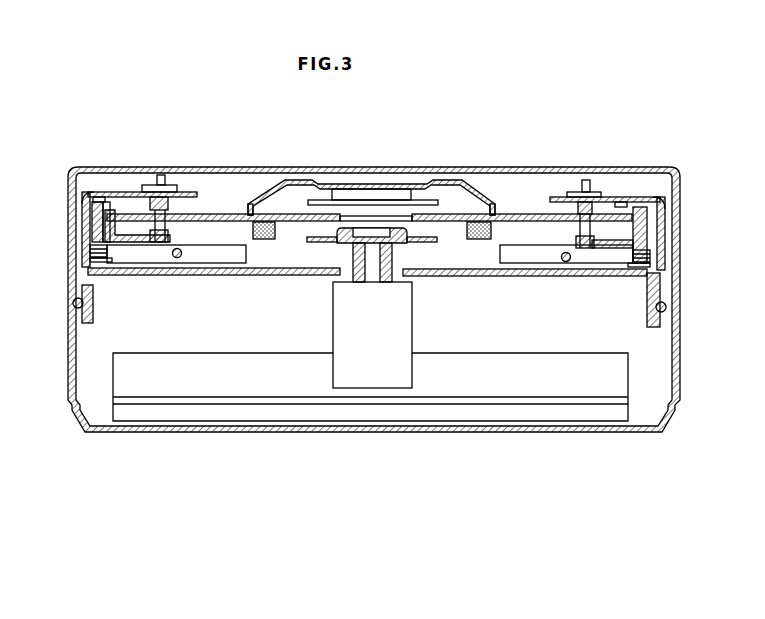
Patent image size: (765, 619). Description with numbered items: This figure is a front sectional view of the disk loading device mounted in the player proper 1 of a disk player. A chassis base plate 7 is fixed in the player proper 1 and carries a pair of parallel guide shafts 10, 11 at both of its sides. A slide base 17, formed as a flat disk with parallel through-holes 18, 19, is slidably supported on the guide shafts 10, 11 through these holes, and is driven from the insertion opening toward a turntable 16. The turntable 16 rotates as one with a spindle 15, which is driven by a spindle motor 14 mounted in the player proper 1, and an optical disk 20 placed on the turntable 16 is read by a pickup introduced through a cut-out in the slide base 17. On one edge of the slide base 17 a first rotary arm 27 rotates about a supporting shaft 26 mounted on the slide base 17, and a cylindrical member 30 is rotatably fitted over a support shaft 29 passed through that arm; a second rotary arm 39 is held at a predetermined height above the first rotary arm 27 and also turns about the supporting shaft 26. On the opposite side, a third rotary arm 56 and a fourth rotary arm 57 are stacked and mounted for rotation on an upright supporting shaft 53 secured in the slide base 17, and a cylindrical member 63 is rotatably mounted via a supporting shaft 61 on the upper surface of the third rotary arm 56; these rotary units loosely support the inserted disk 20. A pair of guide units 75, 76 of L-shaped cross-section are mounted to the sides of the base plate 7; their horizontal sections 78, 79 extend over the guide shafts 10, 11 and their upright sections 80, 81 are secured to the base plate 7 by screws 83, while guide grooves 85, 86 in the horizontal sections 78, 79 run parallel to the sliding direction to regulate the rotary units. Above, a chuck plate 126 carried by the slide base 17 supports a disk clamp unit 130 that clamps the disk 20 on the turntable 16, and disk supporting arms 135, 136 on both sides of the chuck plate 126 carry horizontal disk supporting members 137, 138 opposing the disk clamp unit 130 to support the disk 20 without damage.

The player proper 1 is at (683, 177).
The chassis base plate 7 is at (232, 276).
The guide shaft 10 is at (190, 276).
The guide shaft 11 is at (565, 277).
The spindle motor 14 is at (389, 380).
The spindle 15 is at (372, 272).
The turntable 16 is at (440, 243).
The slide base 17 is at (618, 264).
The through-hole 18 is at (175, 258).
The through-hole 19 is at (563, 262).
The optical disk 20 is at (219, 214).
The supporting shaft 26 is at (90, 256).
The first rotary arm 27 is at (128, 264).
The support shaft 29 is at (160, 175).
The cylindrical member 30 is at (172, 226).
The second rotary arm 39 is at (90, 206).
The supporting shaft 53 is at (650, 258).
The third rotary arm 56 is at (648, 241).
The fourth rotary arm 57 is at (666, 222).
The supporting shaft 61 is at (586, 180).
The cylindrical member 63 is at (590, 244).
The guide unit 75 is at (102, 195).
The guide unit 76 is at (650, 200).
The horizontal section 78 is at (187, 192).
The horizontal section 79 is at (556, 197).
The upright section 80 is at (84, 228).
The upright section 81 is at (662, 290).
The screws 83 is at (76, 303).
The guide groove 85 is at (117, 196).
The guide groove 86 is at (620, 201).
The chuck plate 126 is at (443, 180).
The disk clamp unit 130 is at (356, 199).
The disk supporting arm 135 is at (263, 240).
The disk supporting arm 136 is at (483, 240).
The disk supporting member 137 is at (246, 214).
The disk supporting member 138 is at (493, 214).